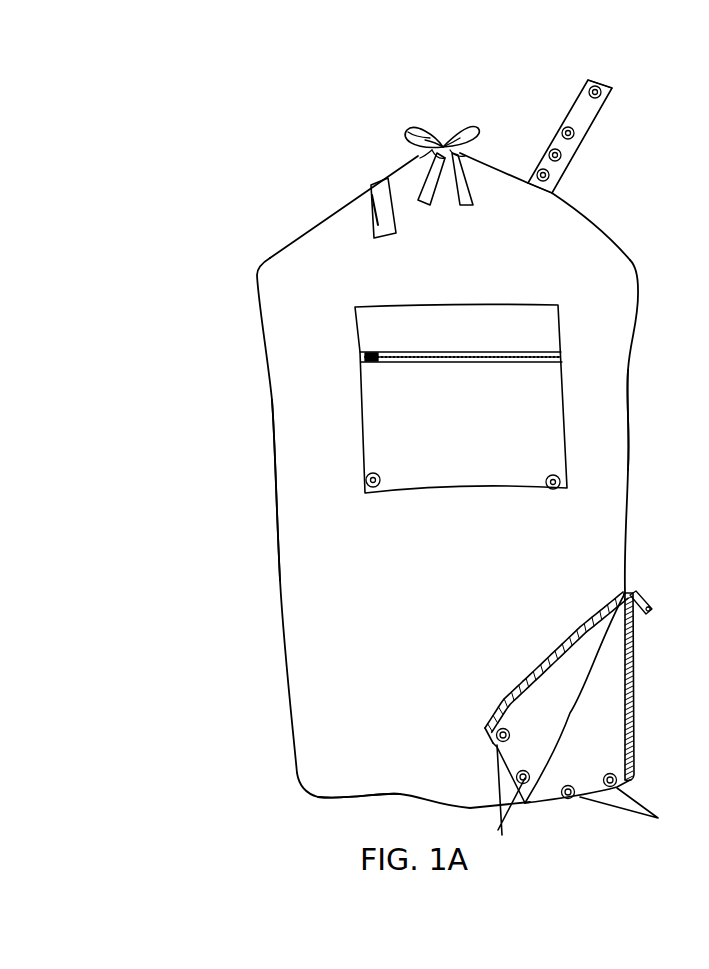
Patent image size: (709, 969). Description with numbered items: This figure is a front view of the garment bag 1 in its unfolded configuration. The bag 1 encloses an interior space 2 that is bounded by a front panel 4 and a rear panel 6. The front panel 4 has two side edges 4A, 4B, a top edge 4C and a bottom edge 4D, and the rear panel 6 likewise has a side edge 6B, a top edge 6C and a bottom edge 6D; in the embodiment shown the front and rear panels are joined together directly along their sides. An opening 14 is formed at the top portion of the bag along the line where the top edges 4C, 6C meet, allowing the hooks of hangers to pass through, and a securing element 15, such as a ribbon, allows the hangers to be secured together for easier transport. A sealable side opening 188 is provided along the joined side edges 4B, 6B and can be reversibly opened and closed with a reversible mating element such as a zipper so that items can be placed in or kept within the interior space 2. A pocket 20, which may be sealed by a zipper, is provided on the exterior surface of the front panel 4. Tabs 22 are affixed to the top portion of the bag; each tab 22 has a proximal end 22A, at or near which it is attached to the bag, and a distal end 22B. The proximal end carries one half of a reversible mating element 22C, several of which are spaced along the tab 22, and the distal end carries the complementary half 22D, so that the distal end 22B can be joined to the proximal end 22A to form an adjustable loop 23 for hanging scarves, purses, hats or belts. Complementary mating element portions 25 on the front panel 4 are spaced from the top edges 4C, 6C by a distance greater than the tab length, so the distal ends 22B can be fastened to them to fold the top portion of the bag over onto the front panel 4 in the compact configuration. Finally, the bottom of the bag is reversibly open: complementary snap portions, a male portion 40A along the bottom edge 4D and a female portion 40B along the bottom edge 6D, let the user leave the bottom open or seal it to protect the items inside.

The garment bag 1 is at (247, 225).
The interior space 2 is at (592, 710).
The front panel 4 is at (308, 565).
The side edge 4A is at (277, 442).
The side edge 4B is at (627, 433).
The top edge 4C is at (417, 158).
The bottom edge 4D is at (323, 800).
The rear panel 6 is at (603, 667).
The side edge 6B is at (632, 703).
The top edge 6C is at (467, 150).
The bottom edge 6D is at (548, 807).
The opening 14 is at (420, 157).
The securing element 15 is at (423, 130).
The pocket 20 is at (387, 392).
The tab 22 is at (373, 205).
The proximal end 22A is at (557, 192).
The distal end 22B is at (613, 88).
The reversible mating element 22C is at (552, 177).
The reversible mating element 22D is at (588, 82).
The loop 23 is at (377, 223).
The reversible mating element portion 25 is at (367, 482).
The male portion of reversible mating element 40A is at (521, 805).
The female portion of reversible mating element 40B is at (644, 815).
The flap snap 188 is at (630, 780).